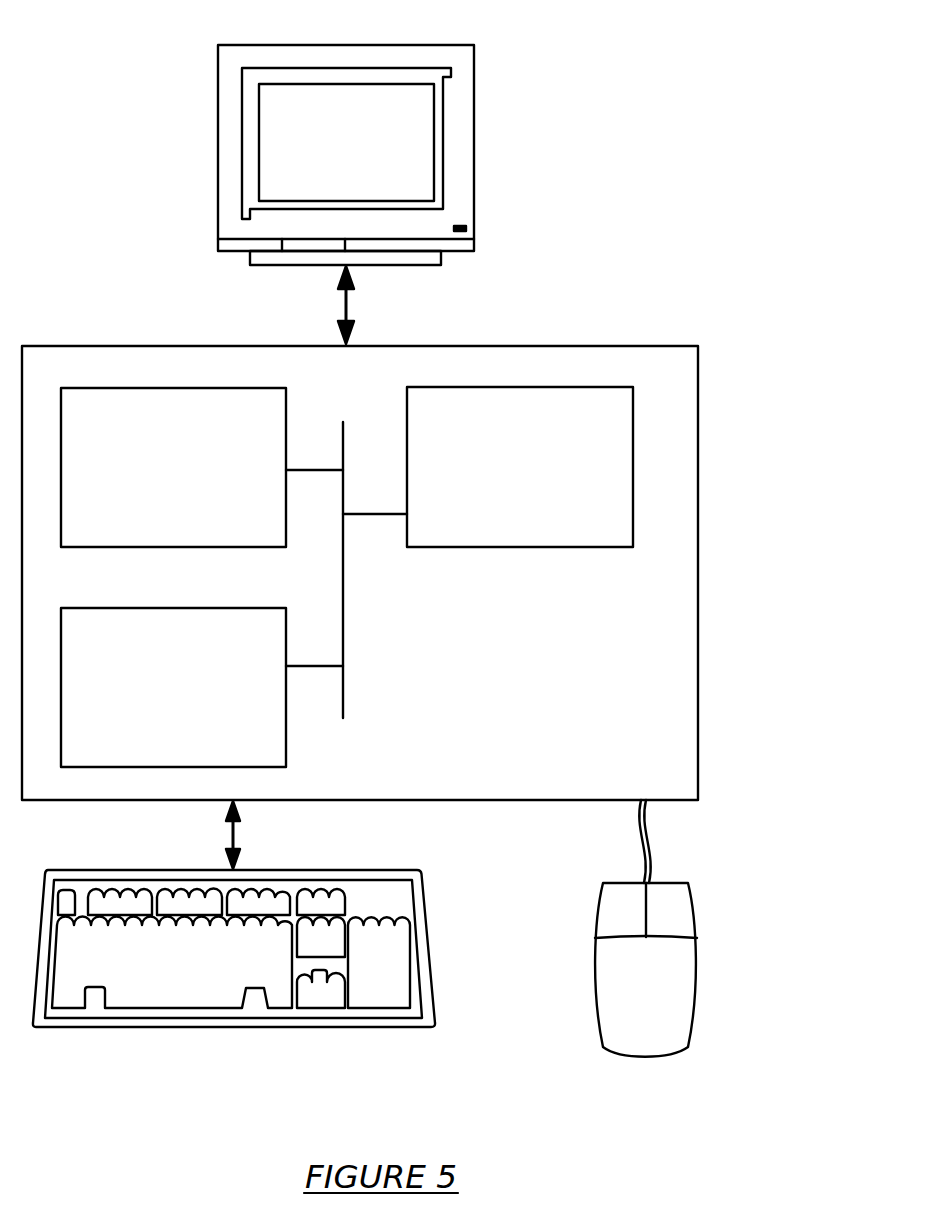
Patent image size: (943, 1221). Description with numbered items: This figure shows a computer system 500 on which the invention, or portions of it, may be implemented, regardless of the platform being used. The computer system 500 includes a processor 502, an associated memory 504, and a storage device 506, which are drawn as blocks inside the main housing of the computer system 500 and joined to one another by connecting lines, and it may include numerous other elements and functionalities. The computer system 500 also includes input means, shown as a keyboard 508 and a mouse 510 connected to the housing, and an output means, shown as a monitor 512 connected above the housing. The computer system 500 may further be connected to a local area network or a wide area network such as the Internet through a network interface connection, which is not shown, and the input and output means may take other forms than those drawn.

The computer system 500 is at (678, 212).
The processor 502 is at (499, 484).
The memory 504 is at (151, 494).
The storage device 506 is at (151, 729).
The keyboard 508 is at (148, 992).
The mouse 510 is at (623, 1011).
The monitor 512 is at (325, 174).